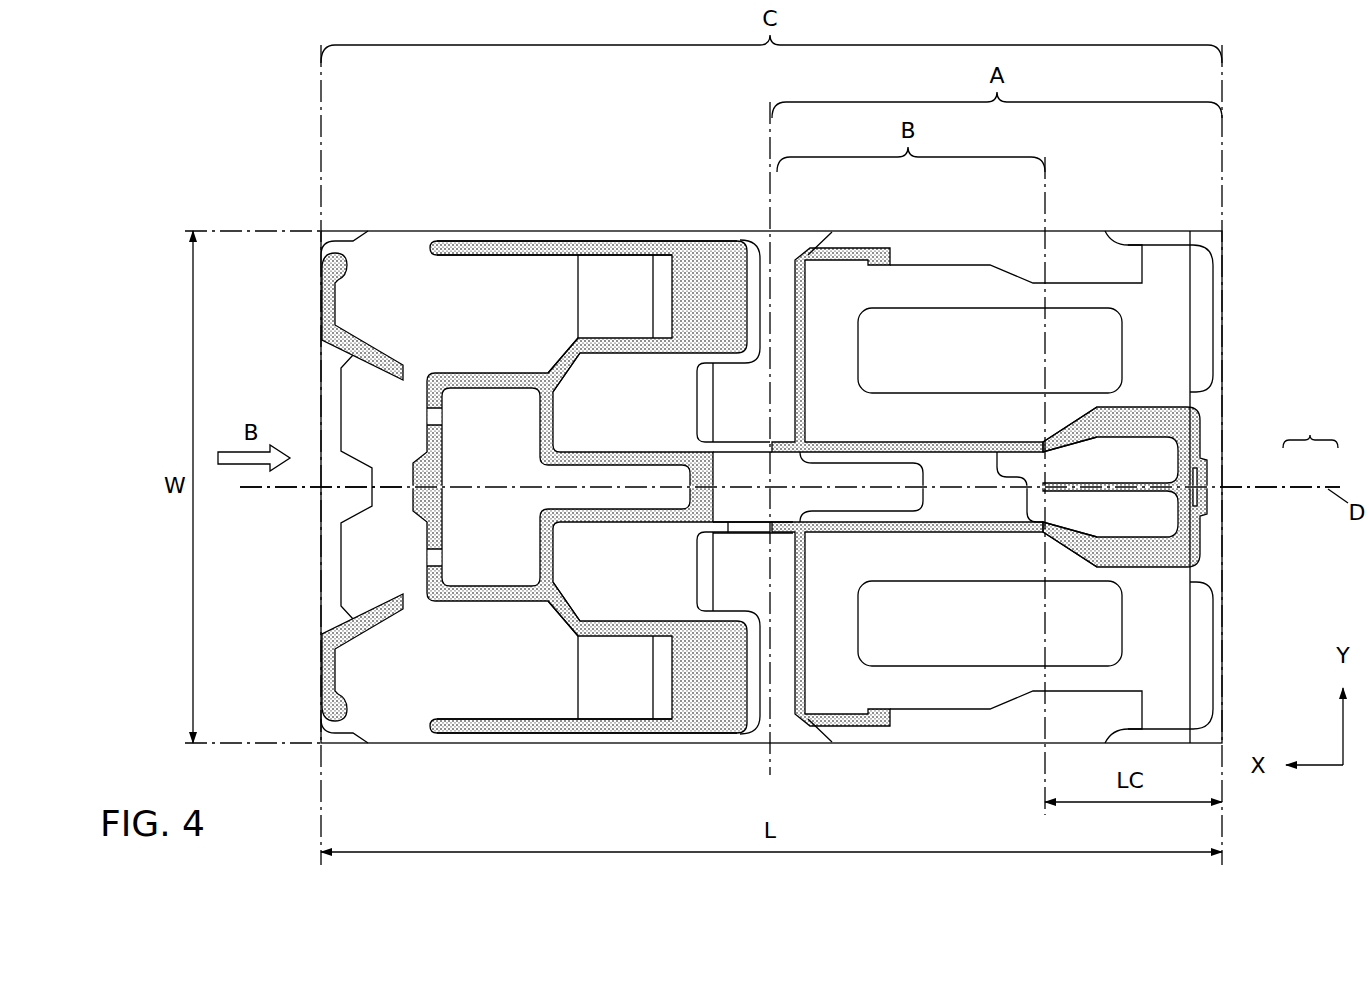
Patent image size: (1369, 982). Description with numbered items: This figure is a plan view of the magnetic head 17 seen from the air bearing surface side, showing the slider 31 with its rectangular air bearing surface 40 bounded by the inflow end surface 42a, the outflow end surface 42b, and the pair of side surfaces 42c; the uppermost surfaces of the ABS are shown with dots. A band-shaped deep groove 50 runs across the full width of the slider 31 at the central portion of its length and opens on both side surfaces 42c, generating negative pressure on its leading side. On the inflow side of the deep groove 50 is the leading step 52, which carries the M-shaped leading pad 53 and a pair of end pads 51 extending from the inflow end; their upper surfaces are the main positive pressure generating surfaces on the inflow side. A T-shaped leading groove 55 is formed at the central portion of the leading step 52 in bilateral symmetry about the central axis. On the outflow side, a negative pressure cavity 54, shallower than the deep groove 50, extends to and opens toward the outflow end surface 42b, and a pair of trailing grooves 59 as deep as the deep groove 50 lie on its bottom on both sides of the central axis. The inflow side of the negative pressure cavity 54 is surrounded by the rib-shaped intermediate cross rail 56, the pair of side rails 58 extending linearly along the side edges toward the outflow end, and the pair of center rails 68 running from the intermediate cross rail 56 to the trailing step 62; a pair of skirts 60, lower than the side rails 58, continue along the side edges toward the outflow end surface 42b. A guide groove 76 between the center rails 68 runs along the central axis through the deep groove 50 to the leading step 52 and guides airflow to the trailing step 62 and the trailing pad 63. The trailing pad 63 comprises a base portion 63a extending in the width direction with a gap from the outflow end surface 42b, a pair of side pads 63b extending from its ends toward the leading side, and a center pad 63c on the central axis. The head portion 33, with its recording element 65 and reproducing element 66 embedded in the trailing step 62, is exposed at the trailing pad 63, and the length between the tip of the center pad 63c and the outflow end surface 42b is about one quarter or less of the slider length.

The magnetic head 17 is at (527, 757).
The slider 31 is at (550, 225).
The head portion 33 is at (1310, 429).
The air bearing surface 40 is at (610, 378).
The inflow end surface 42a is at (320, 545).
The outflow end surface 42b is at (1225, 345).
The side surfaces 42c is at (657, 240).
The deep groove 50 is at (782, 258).
The end pads 51 is at (335, 318).
The leading step 52 is at (465, 308).
The leading pad 53 is at (548, 356).
The negative pressure cavity 54 is at (1152, 308).
The leading groove 55 is at (493, 560).
The intermediate cross rail 56 is at (806, 380).
The side rails 58 is at (858, 247).
The trailing grooves 59 is at (905, 335).
The skirts 60 is at (998, 742).
The trailing step 62 is at (1133, 525).
The trailing pad 63 is at (1210, 440).
The base portion 63a is at (1203, 540).
The side pads 63b is at (1180, 408).
The center pad 63c is at (1210, 500).
The recording element 65 is at (1205, 475).
The reproducing element 66 is at (1195, 487).
The center rails 68 is at (948, 445).
The guide groove 76 is at (892, 500).